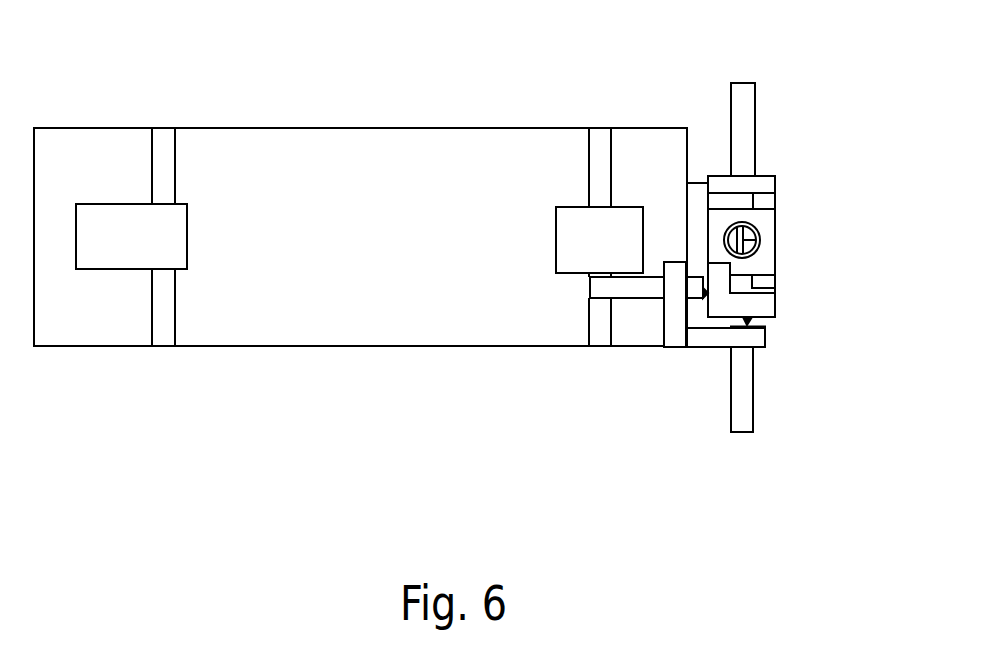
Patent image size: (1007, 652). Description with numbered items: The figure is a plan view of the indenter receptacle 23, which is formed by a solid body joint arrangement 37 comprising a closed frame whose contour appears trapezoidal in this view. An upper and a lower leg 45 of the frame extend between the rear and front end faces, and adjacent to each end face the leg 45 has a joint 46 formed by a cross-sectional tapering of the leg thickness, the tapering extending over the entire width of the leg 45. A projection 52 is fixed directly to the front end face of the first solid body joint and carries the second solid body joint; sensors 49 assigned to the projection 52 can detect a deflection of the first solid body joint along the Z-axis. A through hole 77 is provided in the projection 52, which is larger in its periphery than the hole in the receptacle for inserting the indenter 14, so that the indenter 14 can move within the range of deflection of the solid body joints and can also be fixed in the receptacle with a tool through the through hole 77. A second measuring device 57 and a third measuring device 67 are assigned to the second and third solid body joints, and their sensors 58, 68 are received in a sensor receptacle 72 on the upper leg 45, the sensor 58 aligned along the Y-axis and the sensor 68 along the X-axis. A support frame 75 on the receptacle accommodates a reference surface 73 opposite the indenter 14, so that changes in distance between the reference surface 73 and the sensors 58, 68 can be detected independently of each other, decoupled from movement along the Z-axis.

The indenter 14 is at (760, 238).
The indenter receptacle 23 is at (429, 390).
The solid body joint arrangement 37 is at (318, 377).
The leg 45 is at (408, 143).
The joint 46 is at (162, 110).
The sensors 49 is at (743, 103).
The projection 52 is at (772, 258).
The second measuring device 57 is at (652, 332).
The sensor 58 is at (627, 287).
The third measuring device 67 is at (780, 357).
The sensor 68 is at (745, 418).
The sensor receptacle 72 is at (679, 338).
The reference surface 73 is at (700, 300).
The support frame 75 is at (765, 300).
The through hole 77 is at (747, 227).